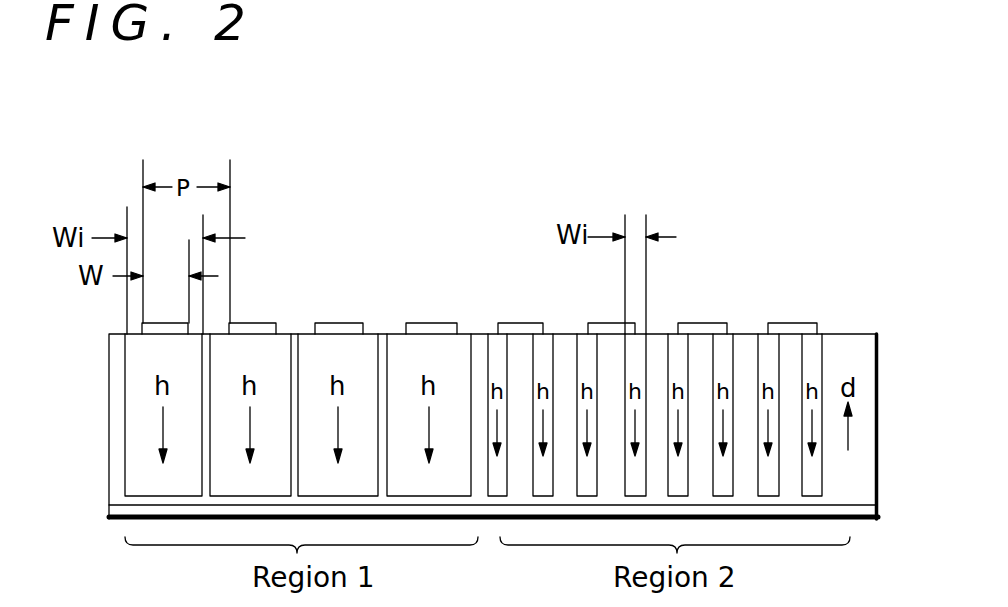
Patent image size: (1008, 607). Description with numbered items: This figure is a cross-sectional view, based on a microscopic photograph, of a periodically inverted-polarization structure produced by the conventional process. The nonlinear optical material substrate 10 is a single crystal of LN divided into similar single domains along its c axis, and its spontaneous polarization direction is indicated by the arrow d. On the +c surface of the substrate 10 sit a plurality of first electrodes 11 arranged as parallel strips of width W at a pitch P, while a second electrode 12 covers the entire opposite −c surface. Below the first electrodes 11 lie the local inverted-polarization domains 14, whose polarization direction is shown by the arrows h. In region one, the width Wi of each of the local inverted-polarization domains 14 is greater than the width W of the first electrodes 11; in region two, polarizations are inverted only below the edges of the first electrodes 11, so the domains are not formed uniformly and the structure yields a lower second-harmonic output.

The nonlinear optical material substrate 10 is at (842, 340).
The first electrodes 11 is at (712, 323).
The second electrode 12 is at (860, 521).
The local inverted-polarization domains 14 is at (437, 343).